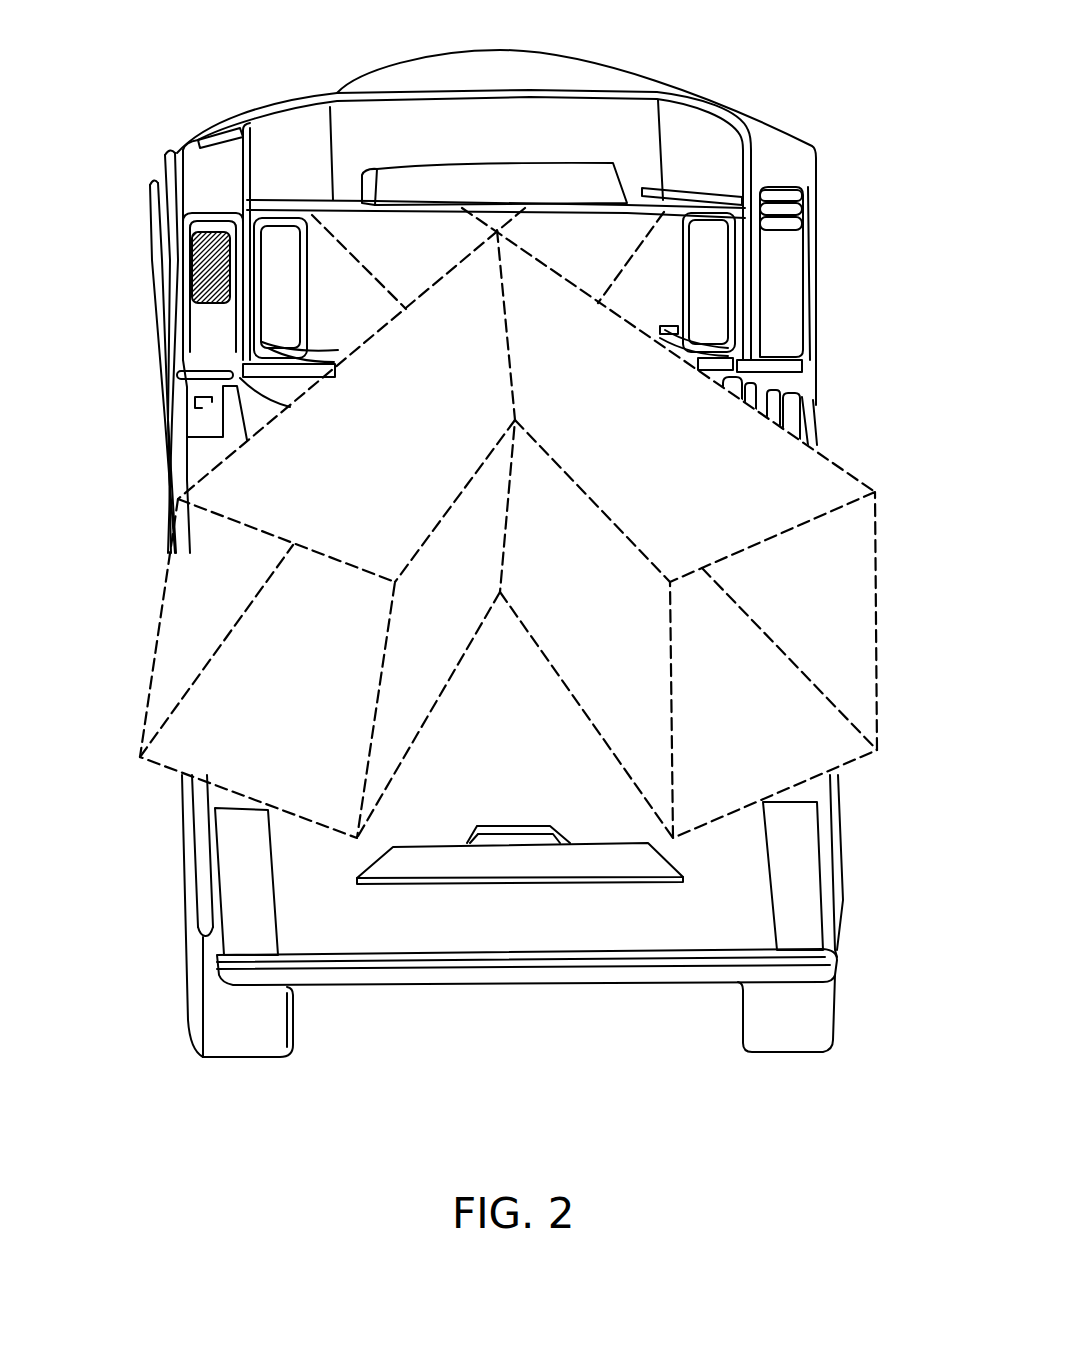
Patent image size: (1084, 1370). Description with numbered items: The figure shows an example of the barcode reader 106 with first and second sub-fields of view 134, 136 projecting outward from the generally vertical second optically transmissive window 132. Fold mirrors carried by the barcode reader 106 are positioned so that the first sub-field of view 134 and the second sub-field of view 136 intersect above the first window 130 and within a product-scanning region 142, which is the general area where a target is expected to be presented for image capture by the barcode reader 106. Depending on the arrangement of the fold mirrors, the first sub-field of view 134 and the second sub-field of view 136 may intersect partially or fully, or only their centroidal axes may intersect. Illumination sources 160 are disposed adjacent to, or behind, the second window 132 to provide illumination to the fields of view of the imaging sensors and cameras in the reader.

The barcode reader 106 is at (222, 48).
The first window 130 is at (575, 698).
The second optically transmissive window 132 is at (667, 317).
The first sub-field of view 134 is at (830, 490).
The second sub-field of view 136 is at (315, 537).
The product-scanning region 142 is at (795, 385).
The illumination source 160 is at (270, 307).